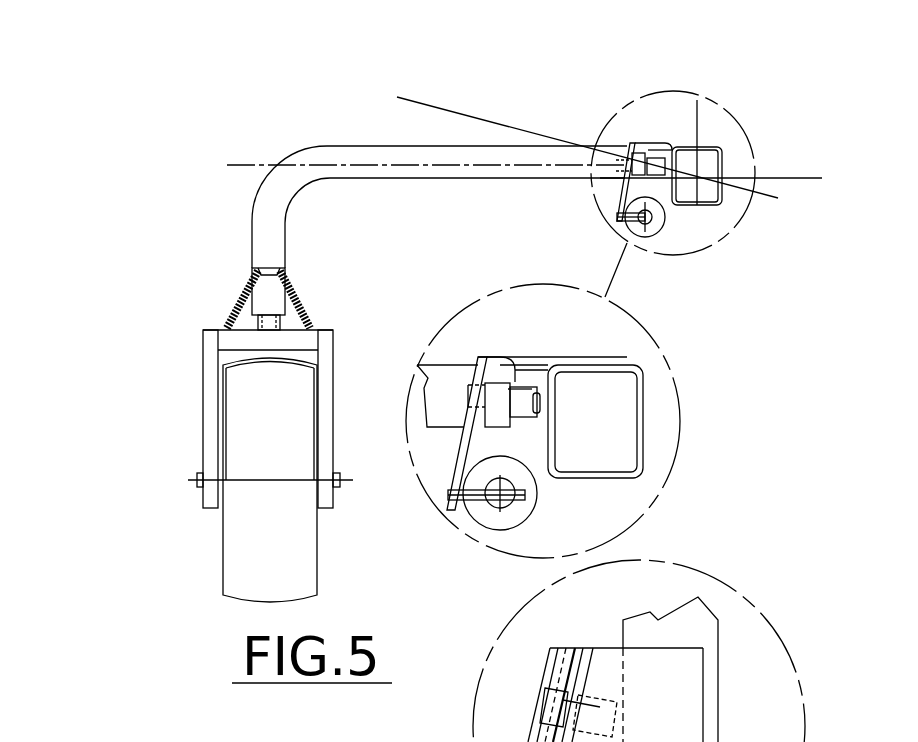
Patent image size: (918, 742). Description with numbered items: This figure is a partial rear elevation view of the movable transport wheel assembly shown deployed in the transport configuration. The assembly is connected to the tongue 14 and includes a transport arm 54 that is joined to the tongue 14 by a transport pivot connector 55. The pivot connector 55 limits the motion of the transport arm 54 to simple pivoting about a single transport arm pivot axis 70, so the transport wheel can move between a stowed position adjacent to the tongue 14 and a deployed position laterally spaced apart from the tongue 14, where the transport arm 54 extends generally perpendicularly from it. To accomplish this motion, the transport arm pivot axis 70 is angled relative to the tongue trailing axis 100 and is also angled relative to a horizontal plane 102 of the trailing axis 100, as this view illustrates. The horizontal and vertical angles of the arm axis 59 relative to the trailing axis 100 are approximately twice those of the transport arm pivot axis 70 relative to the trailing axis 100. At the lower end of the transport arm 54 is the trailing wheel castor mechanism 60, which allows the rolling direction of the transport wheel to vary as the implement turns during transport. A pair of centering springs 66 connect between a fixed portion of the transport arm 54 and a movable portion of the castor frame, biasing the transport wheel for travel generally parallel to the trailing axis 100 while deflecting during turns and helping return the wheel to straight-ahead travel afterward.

The tongue 14 is at (727, 153).
The transport arm 54 is at (500, 180).
The transport pivot connector 55 is at (660, 143).
The arm axis 59 is at (250, 163).
The trailing wheel castor mechanism 60 is at (190, 366).
The centering springs 66 is at (240, 300).
The transport arm pivot axis 70 is at (445, 108).
The trailing axis 100 is at (697, 177).
The horizontal plane 102 is at (800, 182).